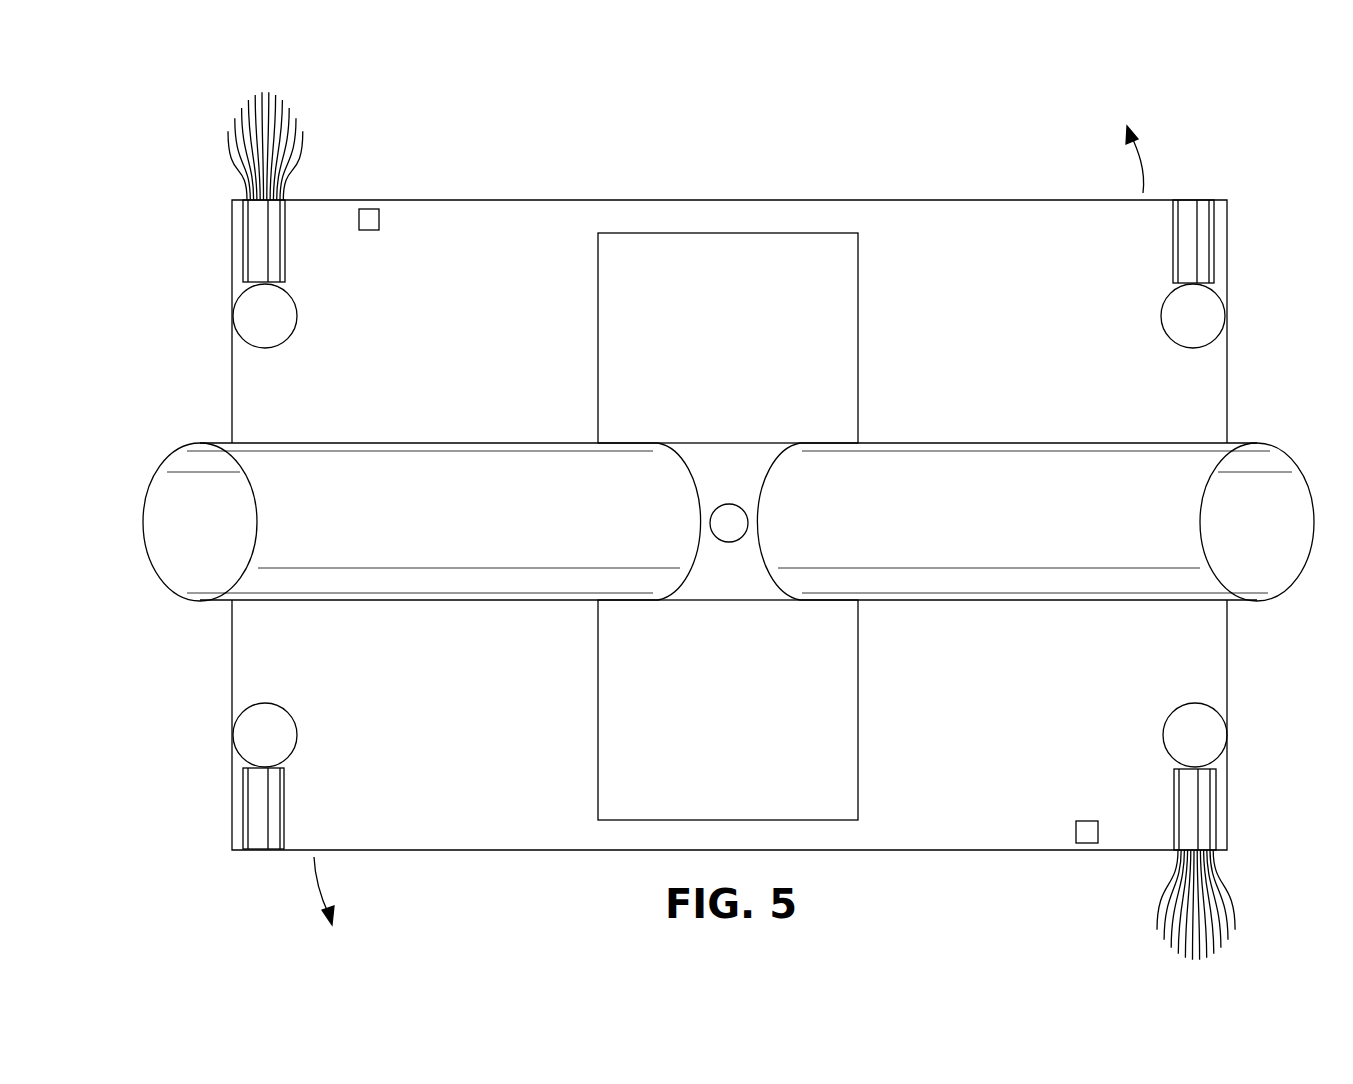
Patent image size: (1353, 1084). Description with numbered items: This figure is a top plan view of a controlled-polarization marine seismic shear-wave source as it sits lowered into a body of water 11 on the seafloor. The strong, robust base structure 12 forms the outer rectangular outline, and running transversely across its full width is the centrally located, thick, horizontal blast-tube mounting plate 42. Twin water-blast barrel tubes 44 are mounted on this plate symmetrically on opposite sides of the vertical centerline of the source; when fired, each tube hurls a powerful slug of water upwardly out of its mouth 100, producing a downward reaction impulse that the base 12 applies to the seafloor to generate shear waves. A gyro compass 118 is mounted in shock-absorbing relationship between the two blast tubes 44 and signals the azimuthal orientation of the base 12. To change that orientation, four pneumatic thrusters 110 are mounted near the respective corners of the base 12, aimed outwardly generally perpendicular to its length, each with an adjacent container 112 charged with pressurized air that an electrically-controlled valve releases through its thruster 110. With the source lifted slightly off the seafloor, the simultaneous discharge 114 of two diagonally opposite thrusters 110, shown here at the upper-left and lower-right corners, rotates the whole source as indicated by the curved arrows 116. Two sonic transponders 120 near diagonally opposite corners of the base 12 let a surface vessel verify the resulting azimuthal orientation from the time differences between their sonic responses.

The body of water 11 is at (849, 134).
The base structure 12 is at (978, 199).
The blast-tube mounting plate 42 is at (749, 329).
The water-blast barrel tubes 44 is at (378, 443).
The mouth 100 is at (1287, 458).
The pneumatic thrusters 110 is at (255, 236).
The containers 112 is at (242, 310).
The simultaneous discharge 114 is at (255, 150).
The curved arrows 116 is at (1145, 168).
The gyro compass 118 is at (731, 505).
The sonic transponders 120 is at (379, 222).